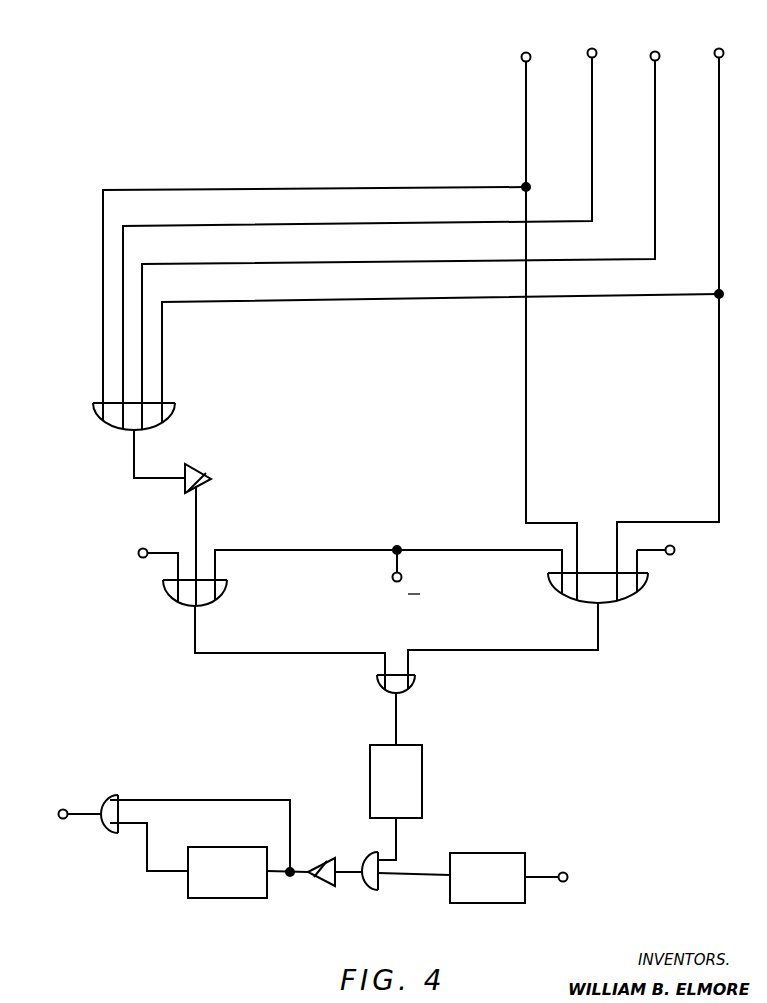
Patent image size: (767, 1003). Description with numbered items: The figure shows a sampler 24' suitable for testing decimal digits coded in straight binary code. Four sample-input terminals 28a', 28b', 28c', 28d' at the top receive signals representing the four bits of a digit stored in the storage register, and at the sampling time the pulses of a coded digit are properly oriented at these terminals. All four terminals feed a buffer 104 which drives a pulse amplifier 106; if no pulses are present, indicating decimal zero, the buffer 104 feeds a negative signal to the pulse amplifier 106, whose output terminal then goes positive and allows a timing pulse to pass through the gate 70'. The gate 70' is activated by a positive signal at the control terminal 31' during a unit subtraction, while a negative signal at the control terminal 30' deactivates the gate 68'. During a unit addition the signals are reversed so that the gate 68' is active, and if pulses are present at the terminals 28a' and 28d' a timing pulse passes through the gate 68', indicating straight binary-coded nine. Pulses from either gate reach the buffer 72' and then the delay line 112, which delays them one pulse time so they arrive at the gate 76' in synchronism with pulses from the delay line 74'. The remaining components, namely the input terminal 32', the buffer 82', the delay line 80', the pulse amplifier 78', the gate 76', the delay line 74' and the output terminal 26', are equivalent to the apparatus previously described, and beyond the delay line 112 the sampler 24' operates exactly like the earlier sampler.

The sampler 24' is at (378, 490).
The sample-input terminal 28a' is at (543, 313).
The sample-input terminal 28b' is at (367, 227).
The sample-input terminal 28c' is at (407, 228).
The sample-input terminal 28d' is at (450, 313).
The buffer 104 is at (118, 426).
The pulse amplifier 106 is at (206, 474).
The control terminal 31' is at (141, 573).
The gate 70' is at (353, 620).
The control terminal 30' is at (673, 567).
The gate 68' is at (542, 631).
The buffer 72' is at (409, 710).
The delay line 112 is at (396, 802).
The input terminal 32' is at (60, 818).
The buffer 82' is at (187, 821).
The delay line 80' is at (248, 872).
The pulse amplifier 78' is at (335, 861).
The gate 76' is at (397, 881).
The delay line 74' is at (504, 878).
The output terminal 26' is at (580, 879).